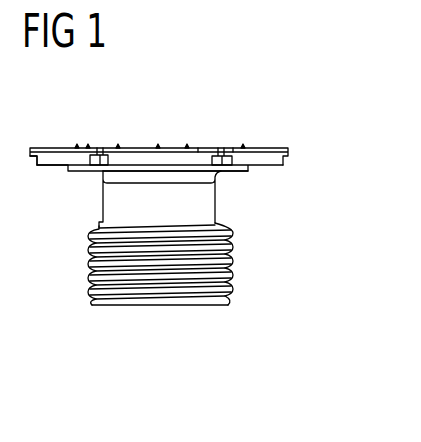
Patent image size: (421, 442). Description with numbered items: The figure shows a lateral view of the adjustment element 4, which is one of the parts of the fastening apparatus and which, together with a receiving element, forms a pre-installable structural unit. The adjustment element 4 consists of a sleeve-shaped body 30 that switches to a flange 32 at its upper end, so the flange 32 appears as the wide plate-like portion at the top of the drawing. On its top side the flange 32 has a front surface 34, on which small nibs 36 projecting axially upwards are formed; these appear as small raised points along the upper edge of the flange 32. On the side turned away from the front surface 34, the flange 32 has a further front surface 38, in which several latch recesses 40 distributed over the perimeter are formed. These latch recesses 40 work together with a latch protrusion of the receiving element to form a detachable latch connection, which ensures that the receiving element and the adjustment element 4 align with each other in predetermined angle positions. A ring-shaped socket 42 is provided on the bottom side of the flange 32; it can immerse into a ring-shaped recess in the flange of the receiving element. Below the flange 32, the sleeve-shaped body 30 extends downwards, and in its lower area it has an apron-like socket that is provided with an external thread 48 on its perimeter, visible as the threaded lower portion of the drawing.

The adjustment element 4 is at (238, 327).
The sleeve-shaped body 30 is at (218, 222).
The flange 32 is at (260, 152).
The front surface 34 is at (54, 148).
The small nibs 36 is at (233, 148).
The front surface 38 is at (47, 167).
The latch recesses 40 is at (105, 148).
The ring-shaped socket 42 is at (247, 172).
The external thread 48 is at (86, 265).